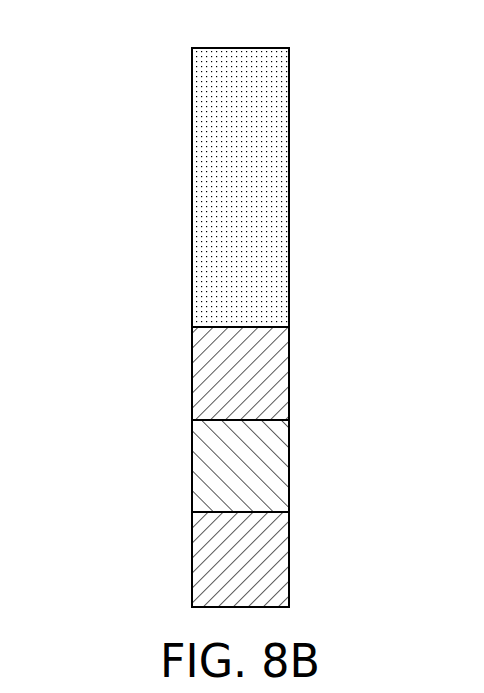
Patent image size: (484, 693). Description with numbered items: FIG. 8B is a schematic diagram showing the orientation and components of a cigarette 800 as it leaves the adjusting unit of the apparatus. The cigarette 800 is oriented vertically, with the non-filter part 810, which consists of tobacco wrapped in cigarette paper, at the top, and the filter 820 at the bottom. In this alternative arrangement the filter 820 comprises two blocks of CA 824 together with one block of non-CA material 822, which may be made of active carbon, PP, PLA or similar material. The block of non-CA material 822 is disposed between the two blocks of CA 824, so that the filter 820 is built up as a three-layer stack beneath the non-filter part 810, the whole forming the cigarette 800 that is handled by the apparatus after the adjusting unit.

The cigarette 800 is at (215, 330).
The non-filter part 810 is at (143, 158).
The filter 820 is at (169, 467).
The block of non-CA material 822 is at (205, 464).
The block of CA 824 is at (203, 559).